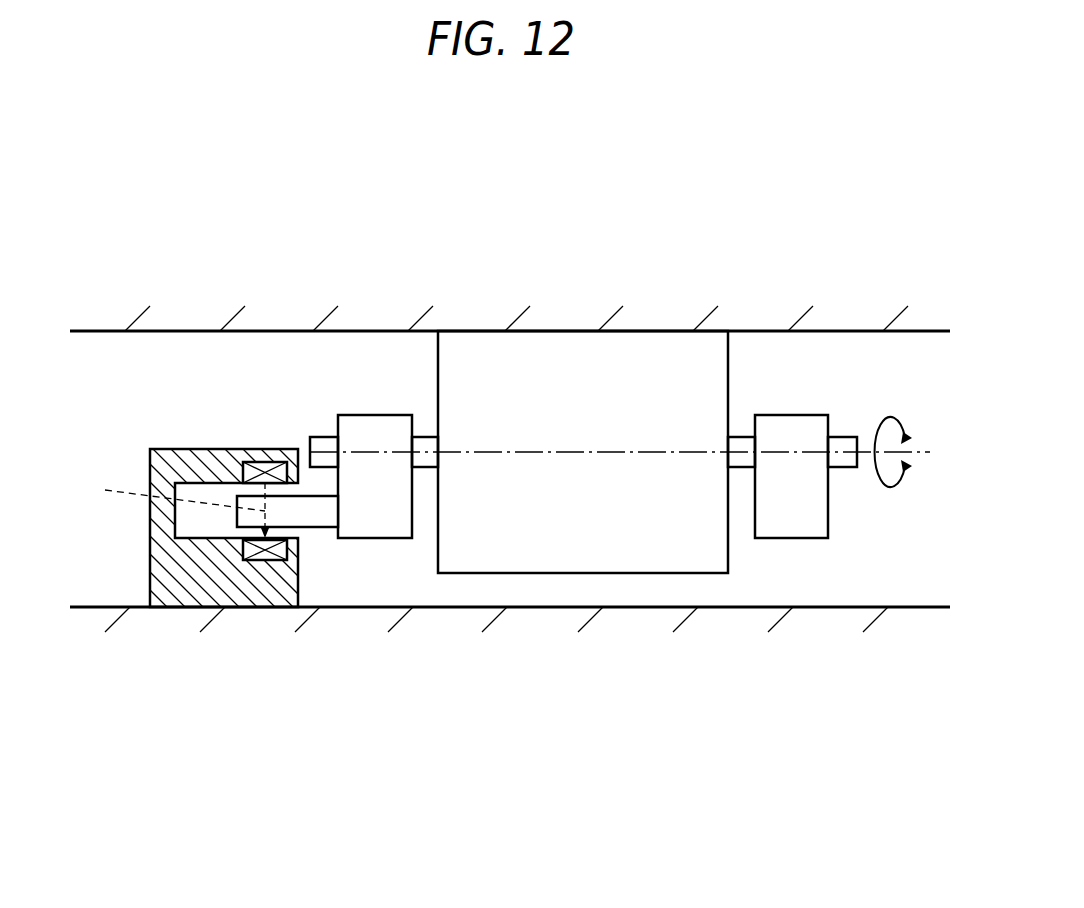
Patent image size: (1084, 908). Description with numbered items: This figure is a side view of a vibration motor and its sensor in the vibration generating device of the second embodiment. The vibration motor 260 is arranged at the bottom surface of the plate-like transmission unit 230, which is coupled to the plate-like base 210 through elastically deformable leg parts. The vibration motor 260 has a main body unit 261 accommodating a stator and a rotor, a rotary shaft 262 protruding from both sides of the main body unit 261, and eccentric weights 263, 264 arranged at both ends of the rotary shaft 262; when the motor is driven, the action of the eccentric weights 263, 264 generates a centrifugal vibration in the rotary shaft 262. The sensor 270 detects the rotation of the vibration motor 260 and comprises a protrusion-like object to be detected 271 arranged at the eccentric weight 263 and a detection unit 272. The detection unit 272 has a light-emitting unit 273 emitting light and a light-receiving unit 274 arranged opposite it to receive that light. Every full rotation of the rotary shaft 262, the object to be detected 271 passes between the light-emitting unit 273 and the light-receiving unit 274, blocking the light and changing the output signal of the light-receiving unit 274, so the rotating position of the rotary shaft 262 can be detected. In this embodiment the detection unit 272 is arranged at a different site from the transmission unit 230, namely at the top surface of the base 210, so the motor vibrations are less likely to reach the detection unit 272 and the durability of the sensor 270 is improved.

The base 210 is at (517, 609).
The transmission unit 230 is at (451, 331).
The vibration motor 260 is at (620, 454).
The main body unit 261 is at (567, 378).
The rotary shaft 262 is at (842, 467).
The eccentric weight 263 is at (385, 520).
The eccentric weight 264 is at (793, 361).
The sensor 270 is at (218, 543).
The object to be detected 271 is at (237, 517).
The detection unit 272 is at (177, 578).
The light-emitting unit 273 is at (265, 462).
The light-receiving unit 274 is at (263, 562).